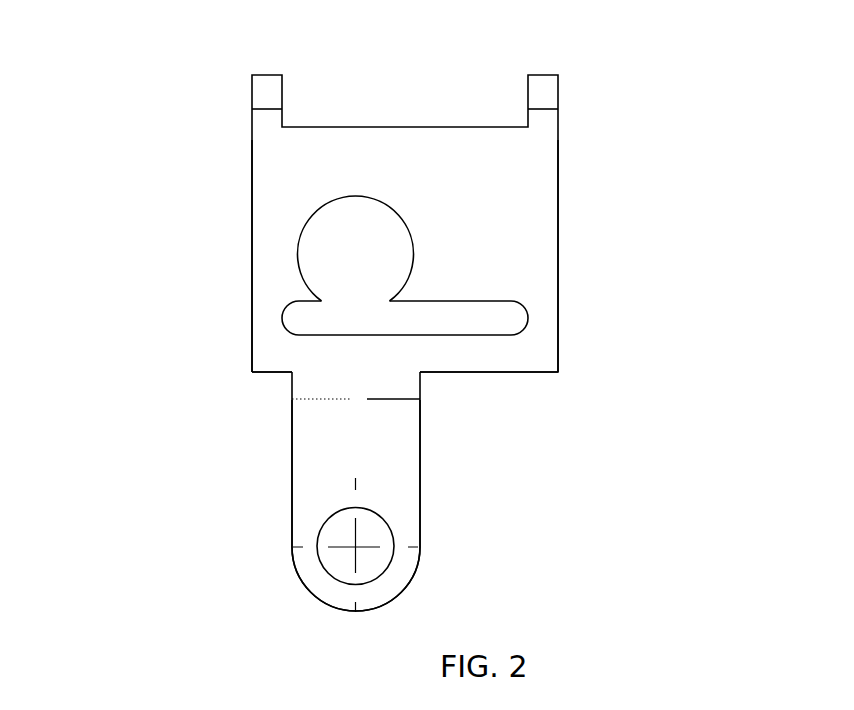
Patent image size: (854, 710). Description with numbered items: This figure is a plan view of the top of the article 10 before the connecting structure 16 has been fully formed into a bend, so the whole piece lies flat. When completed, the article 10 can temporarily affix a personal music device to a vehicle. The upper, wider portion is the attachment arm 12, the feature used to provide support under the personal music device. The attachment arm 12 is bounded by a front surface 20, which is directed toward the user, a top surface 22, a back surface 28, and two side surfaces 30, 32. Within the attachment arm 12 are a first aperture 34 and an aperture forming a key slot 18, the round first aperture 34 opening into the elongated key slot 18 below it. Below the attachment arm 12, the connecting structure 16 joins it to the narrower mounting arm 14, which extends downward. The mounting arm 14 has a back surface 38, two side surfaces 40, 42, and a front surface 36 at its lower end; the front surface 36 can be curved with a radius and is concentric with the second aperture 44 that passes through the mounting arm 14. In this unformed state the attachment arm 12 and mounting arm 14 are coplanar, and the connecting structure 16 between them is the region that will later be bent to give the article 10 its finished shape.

The article 10 is at (630, 55).
The attachment arm 12 is at (274, 188).
The mounting arm 14 is at (305, 467).
The connecting structure 16 is at (322, 377).
The key slot 18 is at (427, 318).
The front surface 20 is at (355, 123).
The top surface 22 is at (317, 167).
The back surface 28 is at (462, 367).
The side surface 30 is at (558, 213).
The side surface 32 is at (250, 247).
The first aperture 34 is at (353, 262).
The front surface 36 is at (353, 612).
The back surface 38 is at (420, 403).
The side surface 40 is at (420, 467).
The side surface 42 is at (292, 532).
The second aperture 44 is at (367, 543).